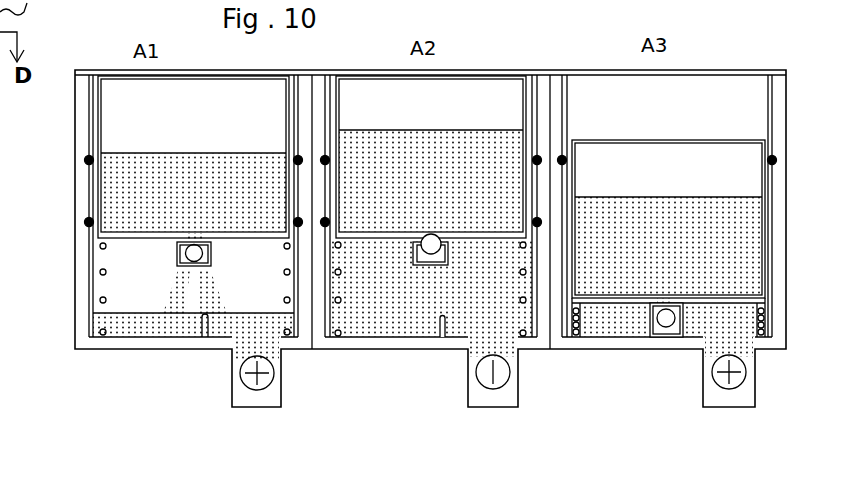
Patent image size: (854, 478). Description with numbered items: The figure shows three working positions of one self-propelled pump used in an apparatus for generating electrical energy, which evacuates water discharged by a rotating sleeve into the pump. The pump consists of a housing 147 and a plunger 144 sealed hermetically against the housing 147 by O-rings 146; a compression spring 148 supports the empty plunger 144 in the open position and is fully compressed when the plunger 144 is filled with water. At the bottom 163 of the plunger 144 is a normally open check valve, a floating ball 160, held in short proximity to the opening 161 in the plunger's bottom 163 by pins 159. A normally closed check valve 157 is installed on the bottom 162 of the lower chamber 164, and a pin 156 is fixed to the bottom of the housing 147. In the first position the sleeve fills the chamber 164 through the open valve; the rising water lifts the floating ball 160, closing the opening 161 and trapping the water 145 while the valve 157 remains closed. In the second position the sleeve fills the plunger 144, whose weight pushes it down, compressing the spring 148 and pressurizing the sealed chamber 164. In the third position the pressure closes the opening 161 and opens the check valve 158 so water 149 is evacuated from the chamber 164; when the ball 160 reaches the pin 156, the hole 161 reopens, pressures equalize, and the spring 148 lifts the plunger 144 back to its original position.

The plunger 144 is at (89, 99).
The liquid in tank 145 is at (117, 150).
The O-rings 146 is at (88, 163).
The housing 147 is at (76, 205).
The compression spring 148 is at (99, 268).
The liquid pool 149 is at (128, 313).
The pin 156 is at (203, 335).
The normally closed check valve 157 is at (273, 388).
The normally closed check valve 158 is at (509, 387).
The pins 159 is at (653, 328).
The floating ball 160 is at (666, 326).
The opening 161 is at (667, 297).
The bottom 162 is at (160, 338).
The bottom 163 is at (112, 249).
The chamber 164 is at (125, 289).